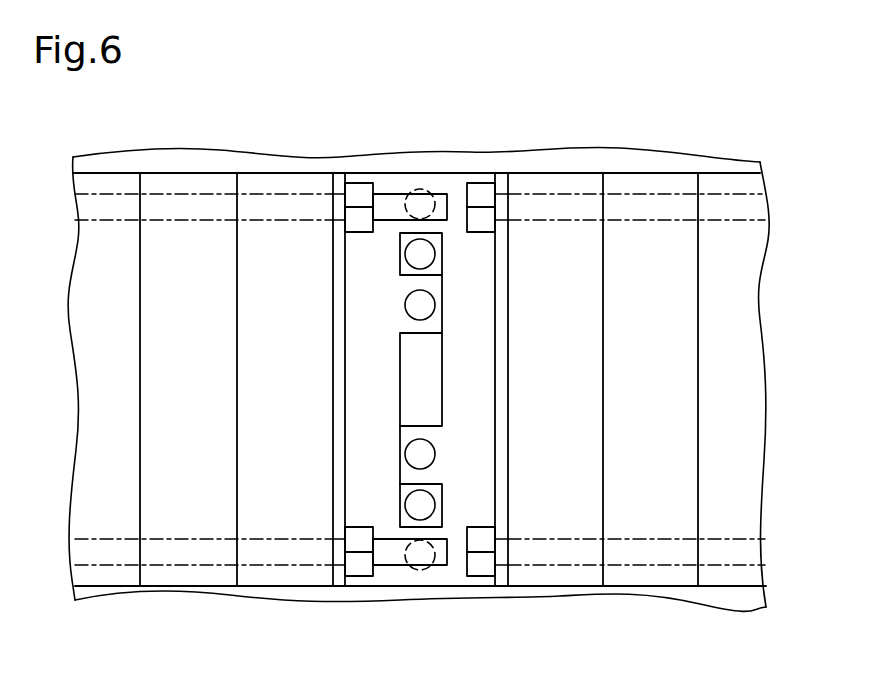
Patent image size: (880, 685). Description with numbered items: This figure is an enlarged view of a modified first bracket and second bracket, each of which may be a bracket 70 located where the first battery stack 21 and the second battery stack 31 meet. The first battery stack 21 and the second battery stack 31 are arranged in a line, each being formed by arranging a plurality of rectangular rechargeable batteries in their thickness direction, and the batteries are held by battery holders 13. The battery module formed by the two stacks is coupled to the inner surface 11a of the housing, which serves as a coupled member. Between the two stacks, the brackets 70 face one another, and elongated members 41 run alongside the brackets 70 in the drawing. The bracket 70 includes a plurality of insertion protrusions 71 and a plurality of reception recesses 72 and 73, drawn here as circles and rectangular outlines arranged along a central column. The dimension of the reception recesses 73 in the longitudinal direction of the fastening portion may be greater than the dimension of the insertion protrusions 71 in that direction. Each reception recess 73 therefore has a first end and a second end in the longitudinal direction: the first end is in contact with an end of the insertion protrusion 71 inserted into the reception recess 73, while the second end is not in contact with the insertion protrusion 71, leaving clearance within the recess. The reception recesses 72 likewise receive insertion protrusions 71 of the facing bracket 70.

The inner surface 11a is at (733, 168).
The battery holder 13 is at (257, 172).
The first battery stack 21 is at (173, 168).
The second battery stack 31 is at (653, 166).
The frame member 41 is at (332, 380).
The bracket 70 is at (448, 172).
The insertion protrusion 71 is at (428, 185).
The reception recess 72 is at (437, 230).
The reception recess 73 is at (412, 390).